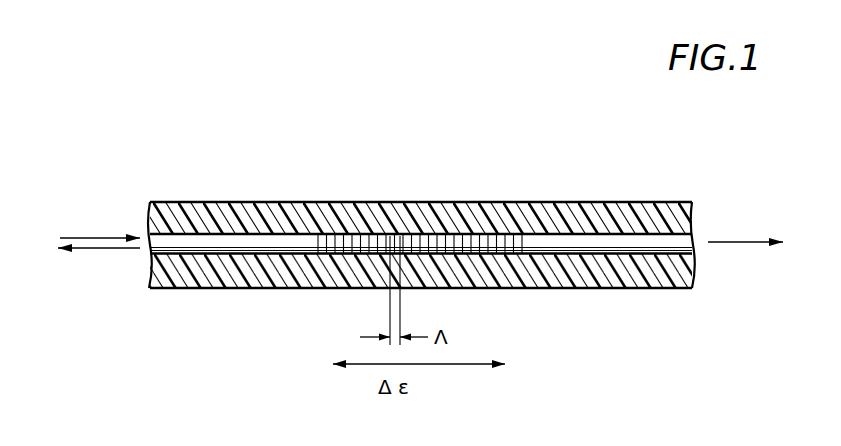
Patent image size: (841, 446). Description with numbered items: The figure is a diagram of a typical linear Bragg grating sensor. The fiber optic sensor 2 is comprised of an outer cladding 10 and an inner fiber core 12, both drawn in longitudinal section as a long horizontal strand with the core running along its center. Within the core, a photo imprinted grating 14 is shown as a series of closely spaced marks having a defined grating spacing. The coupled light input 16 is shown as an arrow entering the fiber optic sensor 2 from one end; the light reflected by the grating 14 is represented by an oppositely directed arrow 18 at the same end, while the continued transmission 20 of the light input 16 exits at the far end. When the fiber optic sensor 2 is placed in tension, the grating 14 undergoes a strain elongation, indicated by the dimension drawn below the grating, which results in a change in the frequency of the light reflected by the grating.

The fiber optic sensor 2 is at (463, 168).
The outer cladding 10 is at (650, 202).
The inner fiber core 12 is at (600, 243).
The photo imprinted grating 14 is at (335, 252).
The coupled light input 16 is at (90, 235).
The reflected light 18 is at (88, 252).
The continued transmission 20 is at (747, 242).